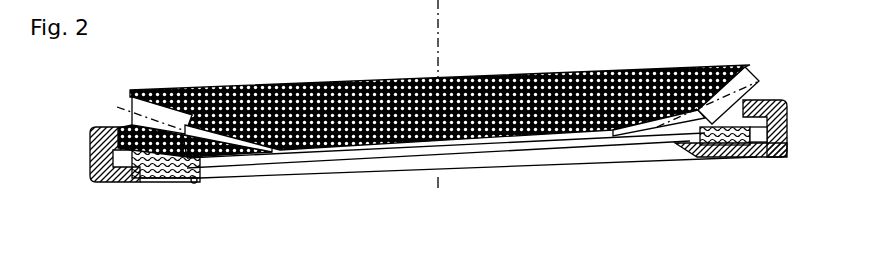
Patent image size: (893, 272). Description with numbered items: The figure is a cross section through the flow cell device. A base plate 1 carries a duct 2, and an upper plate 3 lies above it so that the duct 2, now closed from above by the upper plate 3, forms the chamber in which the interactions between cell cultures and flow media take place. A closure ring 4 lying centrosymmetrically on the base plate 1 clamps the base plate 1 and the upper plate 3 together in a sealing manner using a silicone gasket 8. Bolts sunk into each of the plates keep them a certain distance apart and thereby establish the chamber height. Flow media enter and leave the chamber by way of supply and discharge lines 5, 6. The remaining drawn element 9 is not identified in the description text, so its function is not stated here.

The base plate 1 is at (363, 170).
The duct 2 is at (313, 172).
The upper plate 3 is at (410, 156).
The closure ring 4 is at (763, 160).
The supply line 5 is at (196, 182).
The discharge line 6 is at (673, 158).
The silicone gasket 8 is at (198, 182).
The foil layer 9 is at (463, 147).